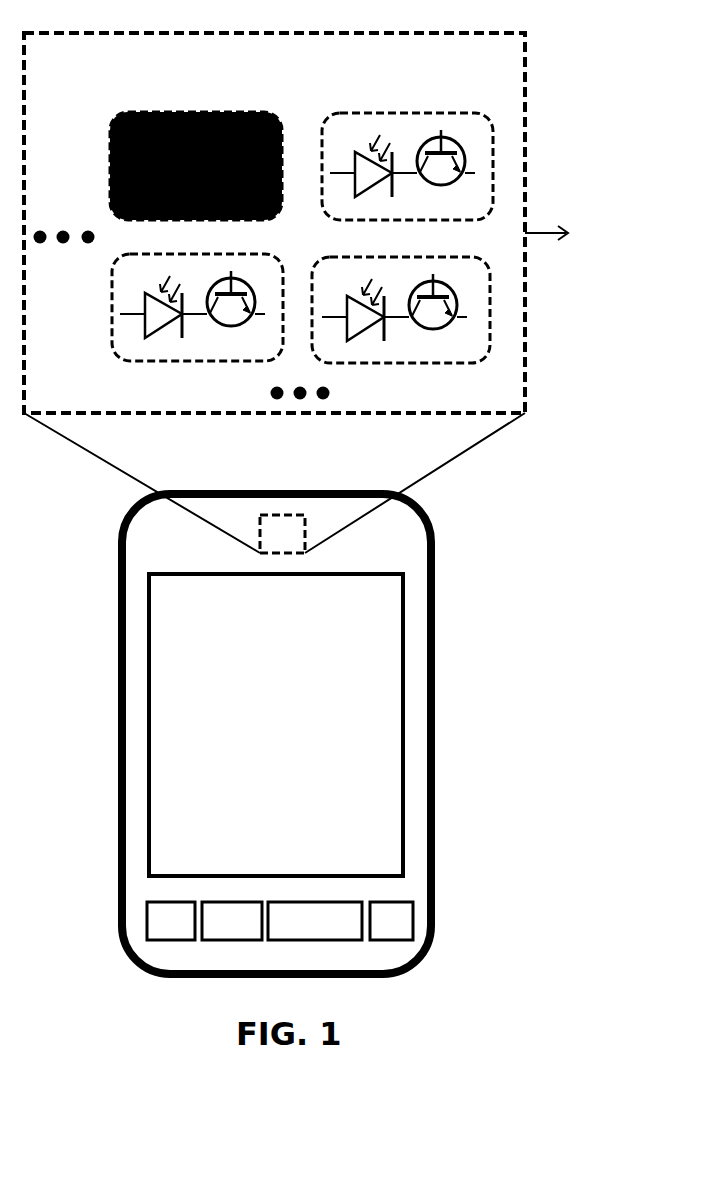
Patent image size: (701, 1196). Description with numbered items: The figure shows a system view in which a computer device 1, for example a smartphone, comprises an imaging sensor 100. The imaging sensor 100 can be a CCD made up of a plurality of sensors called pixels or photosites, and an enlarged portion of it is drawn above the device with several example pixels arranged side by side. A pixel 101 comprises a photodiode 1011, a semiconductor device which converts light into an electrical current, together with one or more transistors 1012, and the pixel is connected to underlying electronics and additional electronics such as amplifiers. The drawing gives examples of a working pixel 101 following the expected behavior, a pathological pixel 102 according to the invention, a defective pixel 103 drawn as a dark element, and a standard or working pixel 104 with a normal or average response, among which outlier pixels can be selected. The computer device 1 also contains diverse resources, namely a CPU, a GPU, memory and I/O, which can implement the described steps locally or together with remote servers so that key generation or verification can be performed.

The computer device 1 is at (437, 513).
The imaging sensor 100 is at (467, 32).
The working pixel 101 is at (407, 136).
The pathological pixel 102 is at (427, 255).
The defective pixel 103 is at (228, 111).
The standard pixel 104 is at (228, 255).
The photodiode 1011 is at (369, 173).
The transistor 1012 is at (421, 168).